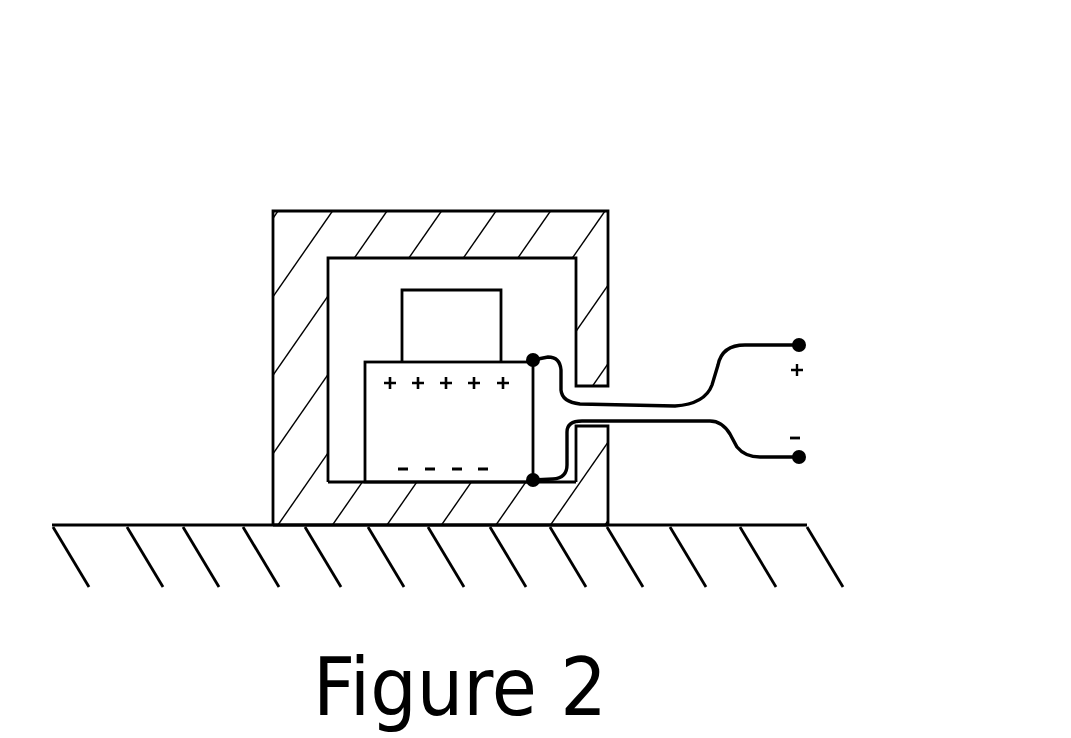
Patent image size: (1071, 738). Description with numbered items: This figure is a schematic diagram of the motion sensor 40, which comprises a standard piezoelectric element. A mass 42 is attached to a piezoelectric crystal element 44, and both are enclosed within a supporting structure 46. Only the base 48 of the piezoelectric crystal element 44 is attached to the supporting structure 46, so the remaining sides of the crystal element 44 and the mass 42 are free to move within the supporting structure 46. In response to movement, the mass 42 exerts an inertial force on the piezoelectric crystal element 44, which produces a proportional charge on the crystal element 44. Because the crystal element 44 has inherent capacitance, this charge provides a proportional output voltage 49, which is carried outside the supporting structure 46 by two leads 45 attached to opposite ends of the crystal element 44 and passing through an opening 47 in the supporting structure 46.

The motion sensor 40 is at (601, 126).
The mass 42 is at (483, 318).
The piezoelectric crystal element 44 is at (405, 428).
The leads 45 is at (672, 444).
The supporting structure 46 is at (533, 226).
The opening 47 is at (602, 396).
The base 48 is at (415, 485).
The output voltage (Vout) 49 is at (851, 383).